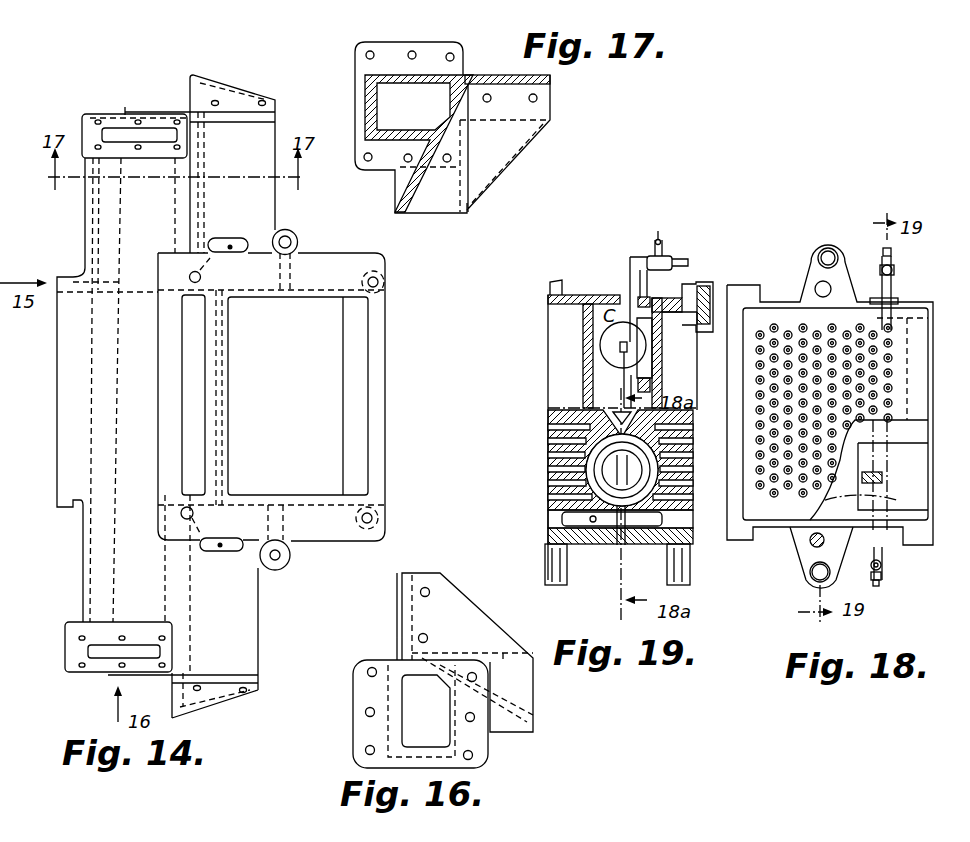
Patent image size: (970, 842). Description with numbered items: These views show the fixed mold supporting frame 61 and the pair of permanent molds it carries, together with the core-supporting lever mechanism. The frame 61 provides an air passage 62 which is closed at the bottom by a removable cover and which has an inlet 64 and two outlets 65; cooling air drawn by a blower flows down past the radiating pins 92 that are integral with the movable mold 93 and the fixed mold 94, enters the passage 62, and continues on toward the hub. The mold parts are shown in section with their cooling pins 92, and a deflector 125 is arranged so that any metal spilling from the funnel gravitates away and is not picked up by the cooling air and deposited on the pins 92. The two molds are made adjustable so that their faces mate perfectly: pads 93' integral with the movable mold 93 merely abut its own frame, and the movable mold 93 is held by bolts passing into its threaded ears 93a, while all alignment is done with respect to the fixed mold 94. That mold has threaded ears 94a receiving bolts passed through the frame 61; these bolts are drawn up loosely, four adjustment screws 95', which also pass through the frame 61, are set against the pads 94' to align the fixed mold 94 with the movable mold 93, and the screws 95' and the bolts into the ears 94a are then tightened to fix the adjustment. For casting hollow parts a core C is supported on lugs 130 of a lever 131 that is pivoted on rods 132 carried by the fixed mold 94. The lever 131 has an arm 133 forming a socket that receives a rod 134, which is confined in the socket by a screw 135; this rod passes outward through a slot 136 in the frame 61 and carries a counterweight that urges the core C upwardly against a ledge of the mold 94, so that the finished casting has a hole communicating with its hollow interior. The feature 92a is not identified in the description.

In FIG. 14, the fixed mold supporting frame 61 is at (193, 86).
In FIG. 17, the fixed mold supporting frame 61 is at (503, 75).
In FIG. 16, the fixed mold supporting frame 61 is at (372, 658).
In FIG. 17, the air passage 62 is at (420, 93).
In FIG. 16, the air passage 62 is at (413, 702).
In FIG. 14, the inlet 64 is at (190, 430).
In FIG. 14, the outlets 65 is at (118, 135).
In FIG. 14, the radiating pins 92 is at (330, 352).
In FIG. 19, the radiating pins 92 is at (560, 460).
In FIG. 18, the radiating pins 92 is at (830, 395).
In FIG. 19, the bar 92a is at (587, 532).
In FIG. 19, the movable mold 93 is at (621, 412).
In FIG. 19, the pads 93' is at (529, 295).
In FIG. 19, the threaded ears 93a is at (548, 572).
In FIG. 18, the threaded ears 93a is at (813, 541).
In FIG. 19, the fixed mold 94 is at (687, 329).
In FIG. 19, the pads 94' is at (719, 272).
In FIG. 19, the threaded ears 94a is at (627, 555).
In FIG. 19, the adjustment screws 95' is at (704, 318).
In FIG. 14, the deflectors 125 is at (343, 425).
In FIG. 19, the lugs 130 is at (622, 375).
In FIG. 18, the lugs 130 is at (883, 477).
In FIG. 19, the lever 131 is at (630, 257).
In FIG. 18, the lever 131 is at (893, 287).
In FIG. 19, the rods 132 is at (652, 382).
In FIG. 19, the arm 133 is at (664, 256).
In FIG. 18, the arm 133 is at (894, 271).
In FIG. 14, the rod 134 is at (230, 246).
In FIG. 19, the rod 134 is at (674, 258).
In FIG. 18, the rod 134 is at (882, 273).
In FIG. 19, the screw 135 is at (657, 238).
In FIG. 18, the screw 135 is at (893, 252).
In FIG. 14, the slot 136 is at (242, 256).
In FIG. 19, the core C is at (623, 345).
In FIG. 18, the core C is at (865, 506).